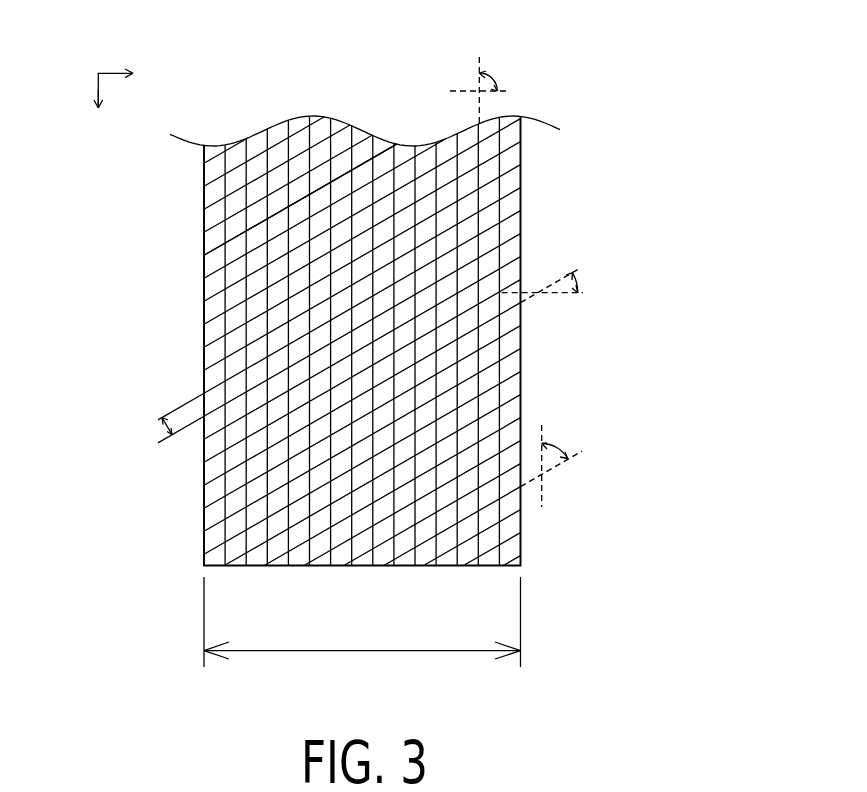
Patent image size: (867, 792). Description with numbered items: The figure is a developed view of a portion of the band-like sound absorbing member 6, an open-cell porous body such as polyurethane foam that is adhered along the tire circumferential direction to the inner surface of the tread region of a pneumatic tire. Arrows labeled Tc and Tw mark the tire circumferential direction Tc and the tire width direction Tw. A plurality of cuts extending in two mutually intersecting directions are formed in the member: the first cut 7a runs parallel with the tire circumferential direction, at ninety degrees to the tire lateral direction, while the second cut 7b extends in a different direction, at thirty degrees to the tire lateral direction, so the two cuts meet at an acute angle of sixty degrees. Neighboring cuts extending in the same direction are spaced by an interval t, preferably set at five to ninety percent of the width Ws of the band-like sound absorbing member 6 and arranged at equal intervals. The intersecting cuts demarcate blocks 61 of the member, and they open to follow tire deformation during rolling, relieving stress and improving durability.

The band-like sound absorbing member 6 is at (385, 341).
The block 61 is at (255, 240).
The first cut 7a is at (480, 173).
The second cut 7b is at (510, 367).
The interval t is at (165, 430).
The width Ws is at (362, 622).
The tire width direction Tw is at (130, 85).
The tire circumferential direction Tc is at (95, 113).